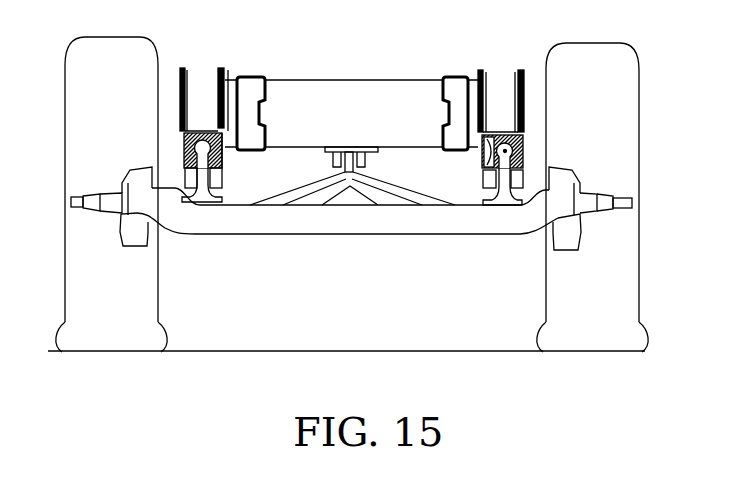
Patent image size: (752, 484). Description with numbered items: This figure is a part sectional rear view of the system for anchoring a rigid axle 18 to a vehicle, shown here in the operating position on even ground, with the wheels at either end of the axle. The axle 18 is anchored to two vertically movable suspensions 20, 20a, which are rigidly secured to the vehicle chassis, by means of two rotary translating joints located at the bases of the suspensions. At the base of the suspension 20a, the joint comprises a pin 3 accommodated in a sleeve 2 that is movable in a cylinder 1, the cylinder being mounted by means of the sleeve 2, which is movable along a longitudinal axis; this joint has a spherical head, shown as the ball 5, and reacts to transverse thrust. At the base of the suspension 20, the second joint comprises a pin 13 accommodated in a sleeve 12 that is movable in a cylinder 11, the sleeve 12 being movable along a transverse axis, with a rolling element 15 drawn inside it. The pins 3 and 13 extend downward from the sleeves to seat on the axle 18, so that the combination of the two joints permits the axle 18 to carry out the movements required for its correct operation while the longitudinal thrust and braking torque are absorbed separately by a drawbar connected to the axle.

The cylinder 1 is at (186, 136).
The sleeve 2 is at (223, 157).
The pin 3 is at (208, 191).
The spherical bearing 5 is at (200, 152).
The cylinder 11 is at (490, 155).
The sleeve 12 is at (520, 140).
The pin 13 is at (506, 195).
The roller bearing 15 is at (522, 154).
The rigid axle 18 is at (377, 236).
The suspension 20 is at (516, 154).
The suspension 20a is at (194, 102).